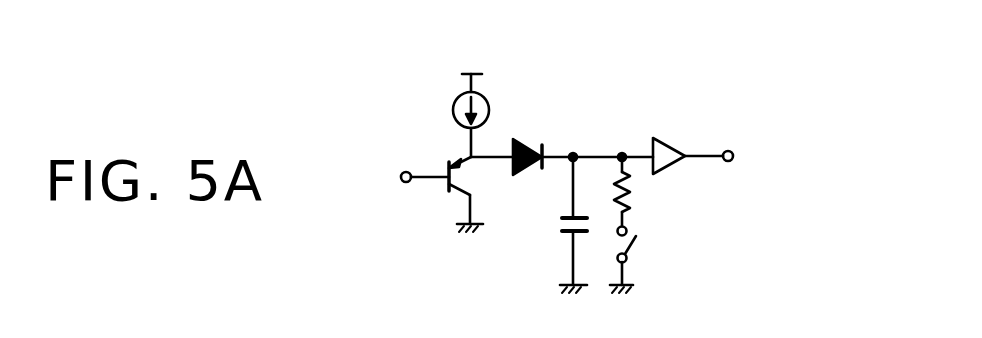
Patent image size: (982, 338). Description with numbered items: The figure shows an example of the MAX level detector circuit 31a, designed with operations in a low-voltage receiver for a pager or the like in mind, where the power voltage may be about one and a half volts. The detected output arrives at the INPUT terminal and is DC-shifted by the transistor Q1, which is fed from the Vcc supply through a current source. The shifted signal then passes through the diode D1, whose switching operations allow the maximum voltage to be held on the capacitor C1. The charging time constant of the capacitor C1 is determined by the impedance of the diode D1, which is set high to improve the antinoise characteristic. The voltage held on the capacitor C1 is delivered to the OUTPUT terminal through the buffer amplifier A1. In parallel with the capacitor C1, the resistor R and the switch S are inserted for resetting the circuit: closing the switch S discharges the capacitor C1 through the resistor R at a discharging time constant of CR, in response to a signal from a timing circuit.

The MAX level detector circuit 31a is at (355, 121).
The transistor Q1 is at (438, 189).
The diode D1 is at (516, 143).
The capacitor C1 is at (556, 226).
The resistor R is at (641, 199).
The switch S is at (640, 249).
The buffer amplifier A1 is at (665, 139).